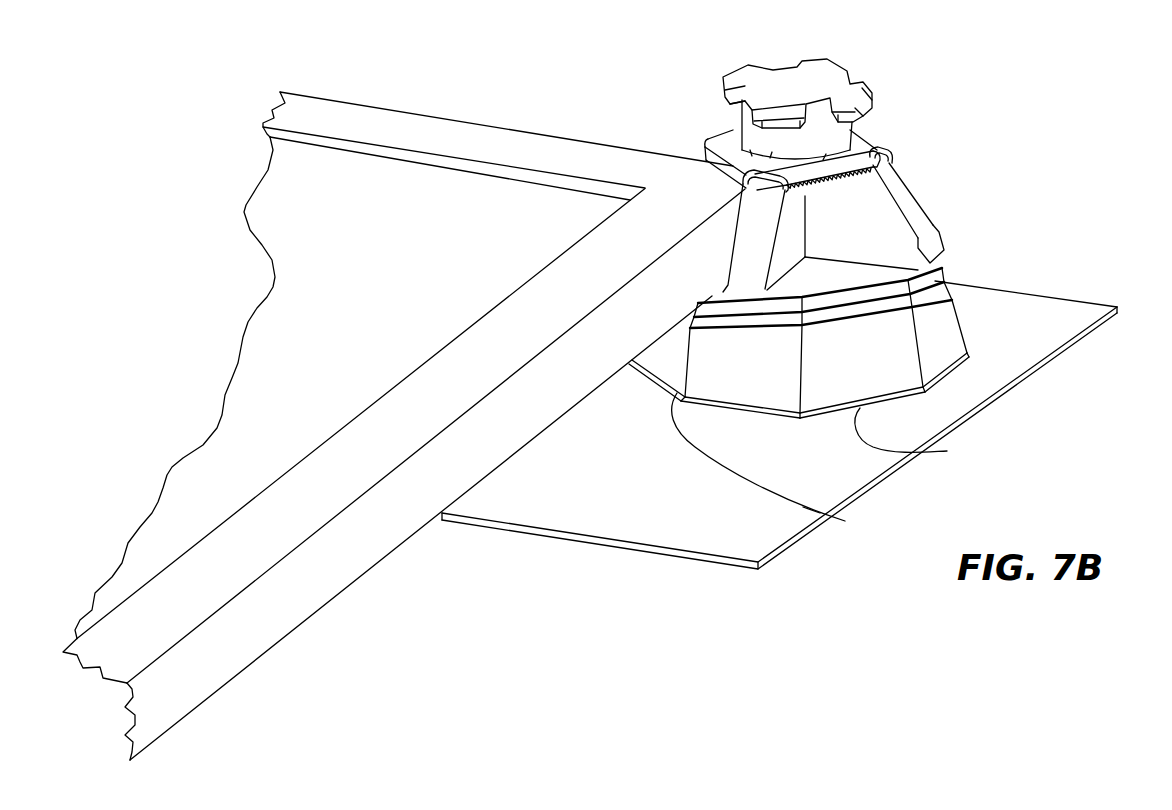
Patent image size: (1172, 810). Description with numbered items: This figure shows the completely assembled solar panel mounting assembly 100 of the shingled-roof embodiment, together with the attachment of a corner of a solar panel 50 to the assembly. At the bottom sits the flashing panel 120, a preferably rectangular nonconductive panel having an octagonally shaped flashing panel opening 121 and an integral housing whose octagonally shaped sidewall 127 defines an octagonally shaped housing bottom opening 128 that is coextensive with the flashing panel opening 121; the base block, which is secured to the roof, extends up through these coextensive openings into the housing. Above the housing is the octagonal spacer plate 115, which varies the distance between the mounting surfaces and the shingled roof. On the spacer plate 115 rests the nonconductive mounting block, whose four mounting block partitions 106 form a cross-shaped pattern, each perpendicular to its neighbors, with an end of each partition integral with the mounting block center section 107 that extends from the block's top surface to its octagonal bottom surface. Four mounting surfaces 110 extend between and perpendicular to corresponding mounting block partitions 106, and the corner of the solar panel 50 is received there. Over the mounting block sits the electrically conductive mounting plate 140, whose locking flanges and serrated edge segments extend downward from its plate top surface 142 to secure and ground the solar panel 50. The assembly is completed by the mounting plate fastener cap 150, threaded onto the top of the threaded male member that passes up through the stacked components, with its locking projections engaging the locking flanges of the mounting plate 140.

The solar panel 50 is at (492, 142).
The solar panel mounting assembly 100 is at (956, 75).
The mounting block partition 106 is at (889, 180).
The mounting block center section 107 is at (810, 233).
The mounting surface 110 is at (884, 278).
The spacer plate 115 is at (935, 284).
The flashing panel 120 is at (1068, 290).
The flashing panel opening 121 is at (820, 513).
The sidewall 127 is at (937, 320).
The housing bottom opening 128 is at (832, 457).
The mounting plate 140 is at (707, 143).
The plate top surface 142 is at (868, 147).
The mounting plate fastener cap 150 is at (750, 125).